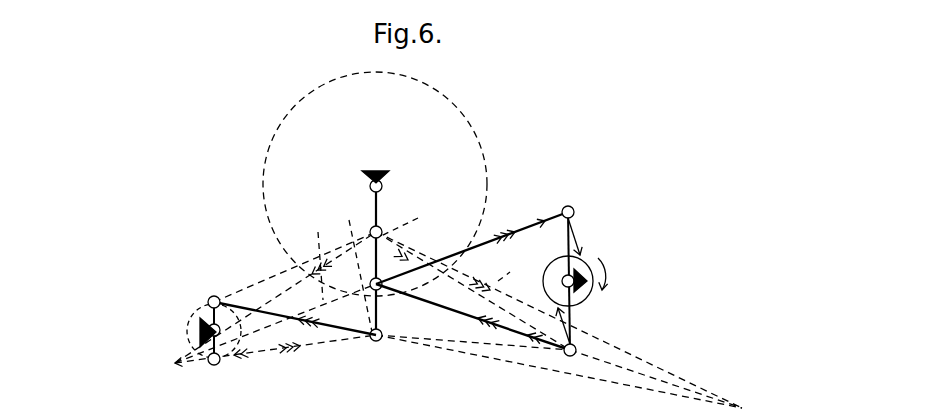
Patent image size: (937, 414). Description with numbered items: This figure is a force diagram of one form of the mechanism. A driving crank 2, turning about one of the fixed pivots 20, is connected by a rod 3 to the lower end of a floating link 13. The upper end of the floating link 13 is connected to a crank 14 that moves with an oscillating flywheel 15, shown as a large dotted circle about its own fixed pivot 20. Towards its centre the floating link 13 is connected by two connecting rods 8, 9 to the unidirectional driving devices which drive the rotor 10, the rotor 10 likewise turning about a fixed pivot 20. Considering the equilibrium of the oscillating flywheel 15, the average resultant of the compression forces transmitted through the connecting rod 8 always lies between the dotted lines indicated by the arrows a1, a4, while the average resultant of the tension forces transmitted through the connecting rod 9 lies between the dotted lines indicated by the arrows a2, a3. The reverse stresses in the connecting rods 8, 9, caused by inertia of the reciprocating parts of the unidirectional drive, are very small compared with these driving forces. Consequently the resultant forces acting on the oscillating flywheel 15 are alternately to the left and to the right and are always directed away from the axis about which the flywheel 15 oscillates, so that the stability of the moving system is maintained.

The driving crank 2 is at (207, 316).
The rod 3 is at (272, 313).
The connecting rod 8 is at (470, 252).
The connecting rod 9 is at (507, 333).
The rotor 10 is at (583, 297).
The floating link 13 is at (368, 339).
The crank 14 is at (380, 212).
The oscillating flywheel 15 is at (461, 106).
The fixed pivot 20 is at (380, 170).
The arrow a1 is at (356, 269).
The arrow a2 is at (406, 221).
The arrow a3 is at (510, 272).
The arrow a4 is at (317, 262).